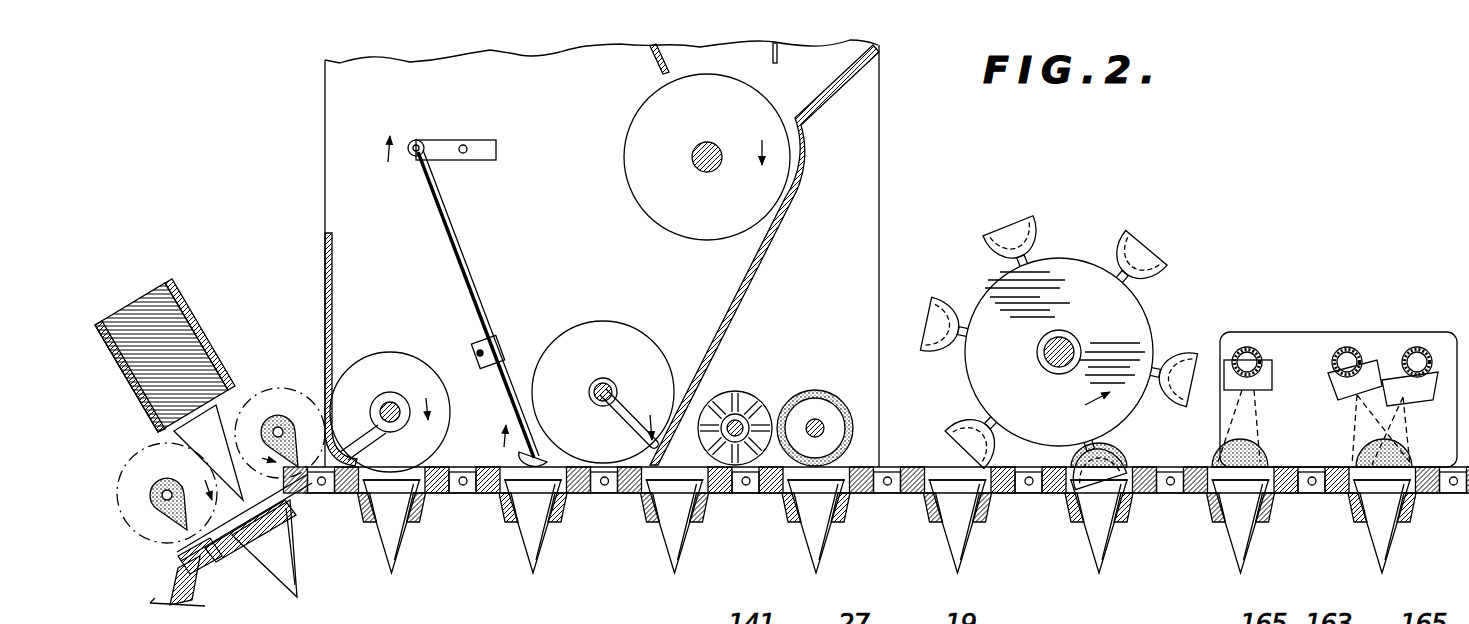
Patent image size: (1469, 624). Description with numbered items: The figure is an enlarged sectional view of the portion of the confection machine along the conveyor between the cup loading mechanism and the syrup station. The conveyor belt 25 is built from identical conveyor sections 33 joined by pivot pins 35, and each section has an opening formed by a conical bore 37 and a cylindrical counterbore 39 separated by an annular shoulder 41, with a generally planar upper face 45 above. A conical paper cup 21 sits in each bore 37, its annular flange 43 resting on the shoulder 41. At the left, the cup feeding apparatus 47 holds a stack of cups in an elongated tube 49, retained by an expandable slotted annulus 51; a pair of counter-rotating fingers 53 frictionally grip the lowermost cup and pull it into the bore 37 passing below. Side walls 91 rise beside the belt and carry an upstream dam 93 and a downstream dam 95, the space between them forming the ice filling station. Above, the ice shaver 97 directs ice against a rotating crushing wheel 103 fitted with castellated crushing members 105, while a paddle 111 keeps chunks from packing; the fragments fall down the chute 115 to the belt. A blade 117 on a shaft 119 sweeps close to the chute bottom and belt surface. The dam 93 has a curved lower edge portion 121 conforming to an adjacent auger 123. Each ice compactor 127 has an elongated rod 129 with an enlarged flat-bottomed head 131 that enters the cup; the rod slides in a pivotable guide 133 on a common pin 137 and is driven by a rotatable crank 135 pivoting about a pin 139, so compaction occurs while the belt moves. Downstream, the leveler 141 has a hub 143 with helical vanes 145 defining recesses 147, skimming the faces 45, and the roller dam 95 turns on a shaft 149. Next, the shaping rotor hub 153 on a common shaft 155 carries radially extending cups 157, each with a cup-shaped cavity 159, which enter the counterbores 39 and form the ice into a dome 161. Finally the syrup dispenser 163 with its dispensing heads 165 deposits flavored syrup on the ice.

The cup 21 is at (220, 440).
The conveyor belt 25 is at (165, 580).
The conveyor section 33 is at (320, 510).
The pin 35 is at (208, 578).
The conical bore 37 is at (380, 525).
The counterbore 39 is at (505, 467).
The annular shoulder 41 is at (470, 470).
The annular flange 43 is at (575, 495).
The upper face 45 is at (503, 440).
The cup feeding apparatus 47 is at (252, 372).
The elongated tube 49 is at (185, 308).
The expandable slotted annulus 51 is at (150, 453).
The rotatable fingers 53 is at (286, 446).
The side wall 91 is at (345, 126).
The upstream dam 93 is at (325, 254).
The downstream dam 95 is at (768, 418).
The ice shaver 97 is at (825, 62).
The crushing wheel 103 is at (628, 126).
The crushing members 105 is at (636, 184).
The paddle 111 is at (773, 48).
The chute 115 is at (748, 273).
The blade 117 is at (642, 425).
The shaft 119 is at (618, 352).
The curved lower edge portion 121 is at (345, 444).
The auger 123 is at (390, 412).
The ice compactor 127 is at (454, 217).
The elongated rod 129 is at (458, 249).
The enlarged head 131 is at (548, 455).
The pivotable guide 133 is at (503, 338).
The rotatable crank 135 is at (437, 147).
The common pin 137 is at (478, 353).
The pin 139 is at (464, 147).
The leveler 141 is at (727, 386).
The hub 143 is at (740, 418).
The vanes 145 is at (700, 500).
The recesses 147 is at (801, 412).
The shaft 149 is at (820, 425).
The hub 153 is at (1112, 312).
The common shaft 155 is at (1040, 353).
The radially extending cup 157 is at (950, 300).
The cup-shaped cavity 159 is at (1092, 497).
The dome 161 is at (1128, 465).
The syrup dispenser 163 is at (1318, 332).
The syrup dispensing heads 165 is at (1392, 352).